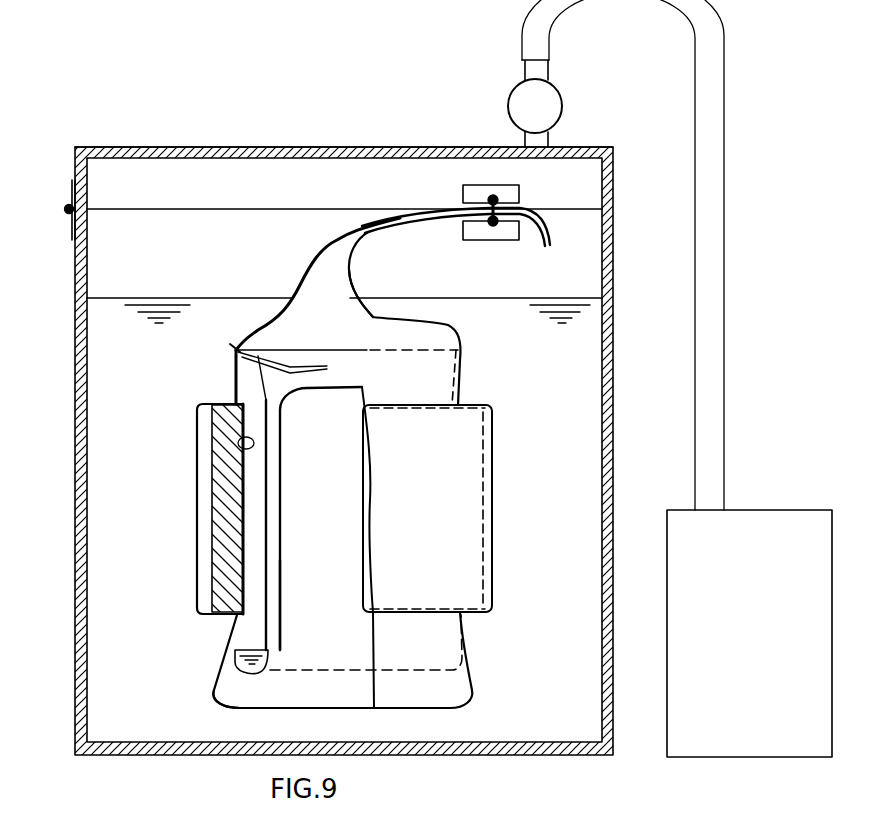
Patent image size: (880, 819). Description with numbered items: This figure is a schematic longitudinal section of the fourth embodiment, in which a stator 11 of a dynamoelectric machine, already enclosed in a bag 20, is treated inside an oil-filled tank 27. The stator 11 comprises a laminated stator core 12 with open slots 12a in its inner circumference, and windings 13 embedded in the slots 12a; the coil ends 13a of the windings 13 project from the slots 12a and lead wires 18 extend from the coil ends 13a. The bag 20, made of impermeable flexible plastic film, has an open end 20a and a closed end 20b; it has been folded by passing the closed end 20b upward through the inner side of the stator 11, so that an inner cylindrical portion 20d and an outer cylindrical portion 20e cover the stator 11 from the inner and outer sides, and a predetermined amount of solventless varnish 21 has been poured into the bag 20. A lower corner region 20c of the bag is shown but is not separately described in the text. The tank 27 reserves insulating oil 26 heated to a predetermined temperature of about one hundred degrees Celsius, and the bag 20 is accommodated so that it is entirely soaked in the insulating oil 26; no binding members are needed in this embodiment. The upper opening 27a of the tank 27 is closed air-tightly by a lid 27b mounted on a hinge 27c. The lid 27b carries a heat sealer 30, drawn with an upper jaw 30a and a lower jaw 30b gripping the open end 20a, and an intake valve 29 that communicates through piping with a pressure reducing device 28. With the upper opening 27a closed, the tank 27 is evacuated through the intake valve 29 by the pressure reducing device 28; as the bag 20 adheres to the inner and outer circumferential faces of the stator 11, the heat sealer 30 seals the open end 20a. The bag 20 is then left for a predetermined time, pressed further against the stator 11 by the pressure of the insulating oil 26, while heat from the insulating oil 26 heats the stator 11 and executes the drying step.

The stator 11 is at (393, 338).
The stator core 12 is at (220, 510).
The slots 12a is at (240, 440).
The windings 13 is at (258, 516).
The coil ends 13a is at (236, 348).
The lead wires 18 is at (292, 362).
The bag 20 is at (473, 323).
The open end 20a is at (547, 244).
The closed end 20b is at (328, 382).
The bag bottom corner 20c is at (212, 698).
The inner cylindrical portion 20d is at (283, 568).
The outer cylindrical portion 20e is at (197, 552).
The solventless varnish 21 is at (232, 684).
The insulating oil 26 is at (588, 298).
The tank 27 is at (613, 398).
The upper opening 27a is at (140, 212).
The lid 27b is at (262, 147).
The hinge 27c is at (67, 206).
The pressure reducing device 28 is at (768, 510).
The intake valve 29 is at (508, 107).
The heat sealer 30 is at (519, 209).
The upper clamp jaw 30a is at (489, 198).
The lower clamp jaw 30b is at (493, 226).